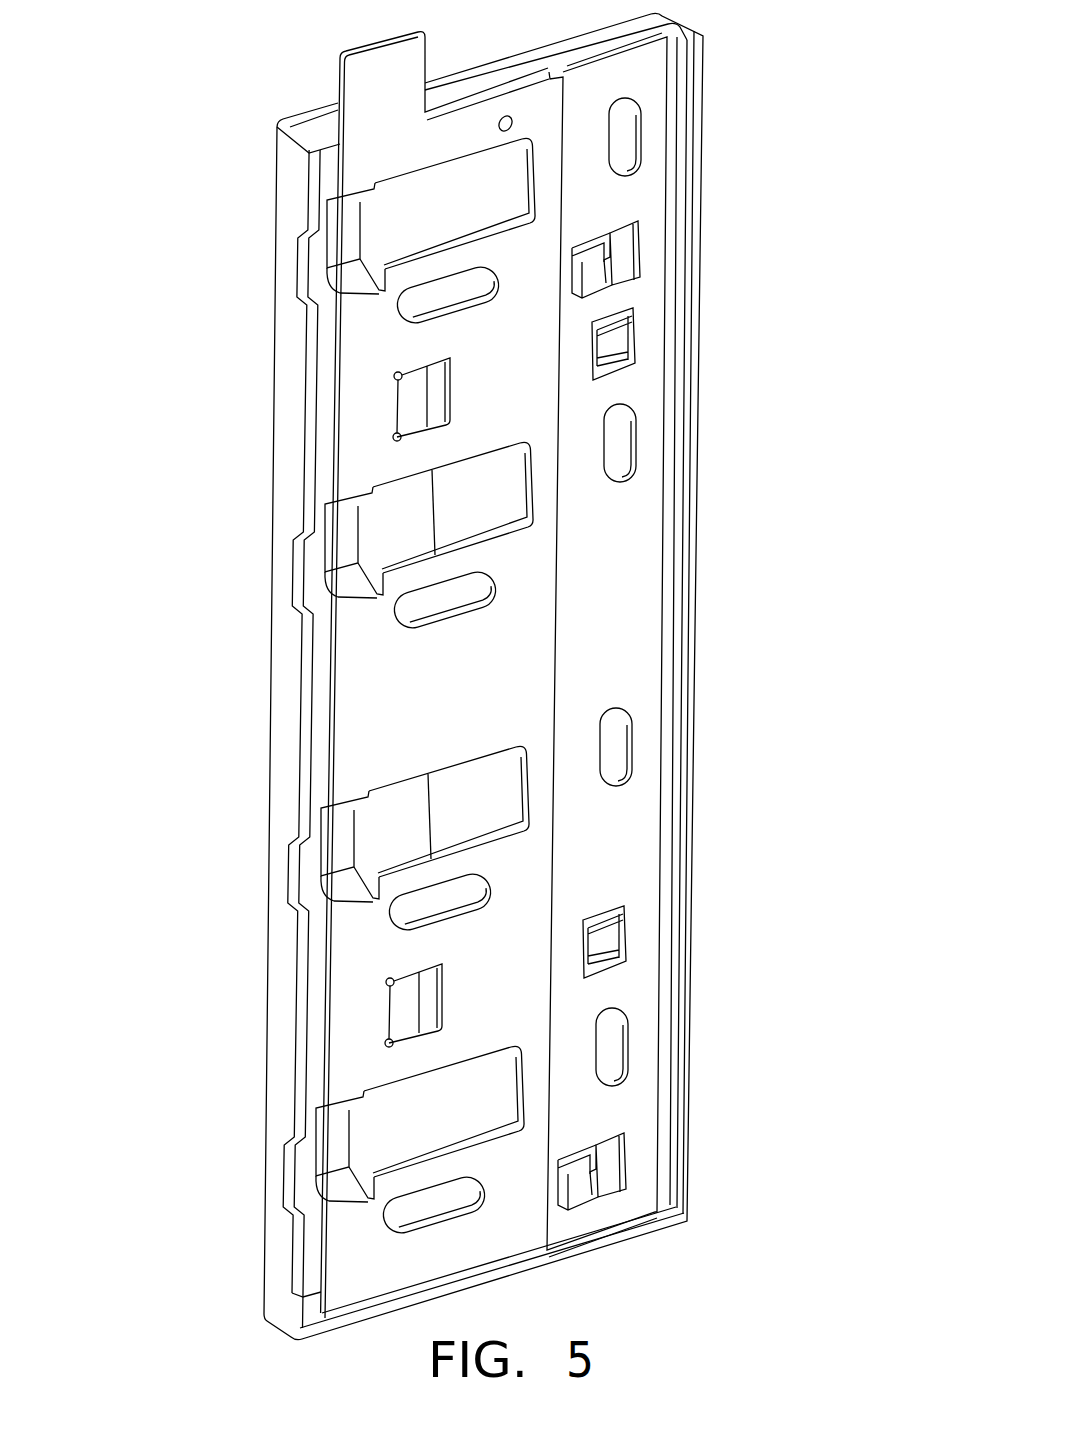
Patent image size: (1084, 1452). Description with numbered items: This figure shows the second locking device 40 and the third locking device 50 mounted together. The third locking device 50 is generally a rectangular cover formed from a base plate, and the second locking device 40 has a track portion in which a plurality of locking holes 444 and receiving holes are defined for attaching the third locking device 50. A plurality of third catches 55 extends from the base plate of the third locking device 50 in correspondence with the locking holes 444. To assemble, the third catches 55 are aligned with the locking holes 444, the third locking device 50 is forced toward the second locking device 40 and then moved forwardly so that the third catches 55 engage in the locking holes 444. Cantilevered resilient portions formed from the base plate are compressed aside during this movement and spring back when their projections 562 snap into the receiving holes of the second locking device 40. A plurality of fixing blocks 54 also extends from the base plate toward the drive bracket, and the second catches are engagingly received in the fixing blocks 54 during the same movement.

The third locking device 50 is at (308, 132).
The second locking device 40 is at (550, 117).
The locking holes 444 is at (623, 248).
The third catches 55 is at (590, 268).
The projection 562 is at (630, 368).
The fixing blocks 54 is at (415, 395).